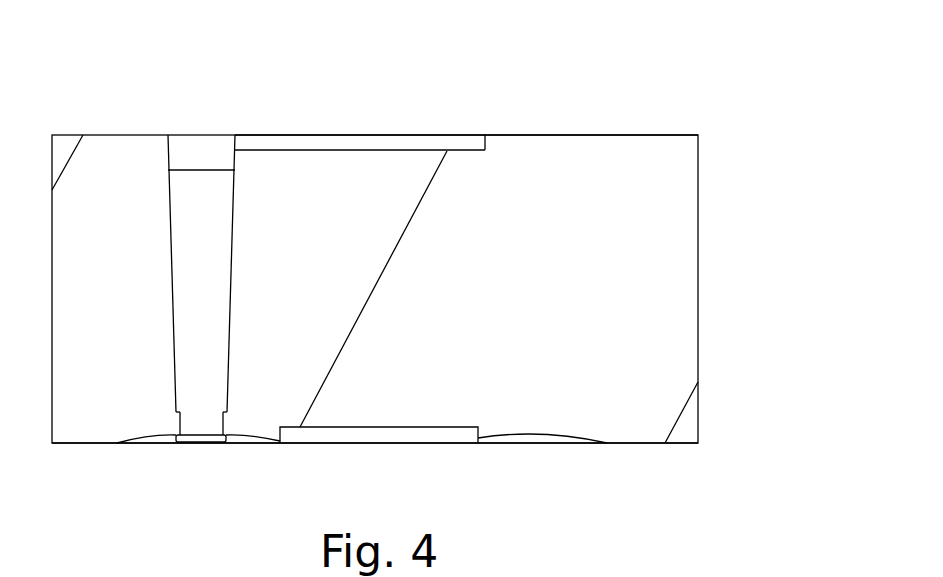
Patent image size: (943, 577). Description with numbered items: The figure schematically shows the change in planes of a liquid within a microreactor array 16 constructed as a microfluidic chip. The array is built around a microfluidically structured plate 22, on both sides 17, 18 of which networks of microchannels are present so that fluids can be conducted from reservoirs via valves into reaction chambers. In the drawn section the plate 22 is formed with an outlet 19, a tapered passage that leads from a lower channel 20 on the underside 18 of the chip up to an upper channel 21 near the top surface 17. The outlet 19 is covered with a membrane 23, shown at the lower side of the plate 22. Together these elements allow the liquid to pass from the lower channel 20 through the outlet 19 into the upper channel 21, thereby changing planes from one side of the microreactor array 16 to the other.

The microreactor array 16 is at (667, 113).
The upper side 17 is at (520, 135).
The underside 18 is at (632, 443).
The outlet 19 is at (222, 294).
The lower channel 20 is at (417, 435).
The upper channel 21 is at (328, 145).
The microfluidically structured plate 22 is at (652, 252).
The membrane 23 is at (540, 443).